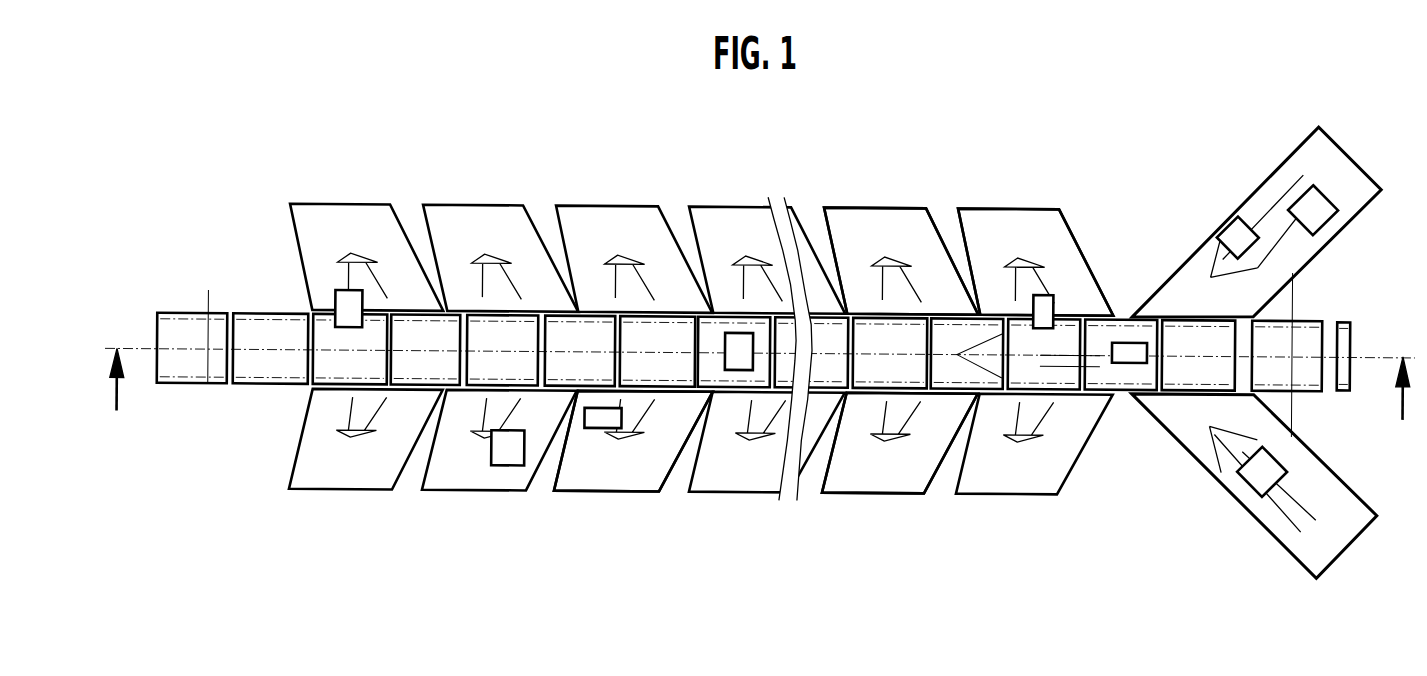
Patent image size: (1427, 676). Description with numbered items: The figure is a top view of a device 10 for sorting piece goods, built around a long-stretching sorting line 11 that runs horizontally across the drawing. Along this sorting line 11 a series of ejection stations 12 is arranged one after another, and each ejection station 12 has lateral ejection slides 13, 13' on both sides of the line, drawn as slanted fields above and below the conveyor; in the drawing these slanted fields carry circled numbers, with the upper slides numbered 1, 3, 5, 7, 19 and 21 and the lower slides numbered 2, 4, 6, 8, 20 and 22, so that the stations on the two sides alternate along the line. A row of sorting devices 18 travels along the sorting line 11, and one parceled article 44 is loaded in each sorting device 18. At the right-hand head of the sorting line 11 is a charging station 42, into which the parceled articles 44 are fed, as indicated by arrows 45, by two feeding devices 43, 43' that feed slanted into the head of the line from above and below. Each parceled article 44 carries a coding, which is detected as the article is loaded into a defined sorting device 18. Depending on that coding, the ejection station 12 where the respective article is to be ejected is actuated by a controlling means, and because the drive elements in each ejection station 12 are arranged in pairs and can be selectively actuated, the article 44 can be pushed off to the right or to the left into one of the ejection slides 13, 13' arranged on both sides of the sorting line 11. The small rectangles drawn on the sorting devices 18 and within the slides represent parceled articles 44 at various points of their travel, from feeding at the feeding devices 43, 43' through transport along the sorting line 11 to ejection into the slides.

The device for sorting piece goods 10 is at (500, 135).
The sorting line 11 is at (259, 299).
The ejection station 12 is at (947, 201).
The ejection slide 13 is at (899, 479).
The ejection slide 13' is at (1035, 231).
The sorting device 18 is at (402, 345).
The charging station 42 is at (1195, 203).
The feeding device 43 is at (1253, 486).
The feeding device 43' is at (1261, 205).
The parceled article 44 is at (733, 363).
The arrow 45 is at (1267, 215).
The station 1 is at (366, 257).
The station 2 is at (366, 439).
The station 3 is at (500, 258).
The station 4 is at (499, 440).
The station 5 is at (634, 259).
The station 6 is at (633, 441).
The station 7 is at (767, 260).
The station 8 is at (767, 442).
The station 19 is at (901, 261).
The station 20 is at (900, 443).
The station 21 is at (1035, 262).
The station 22 is at (1034, 444).